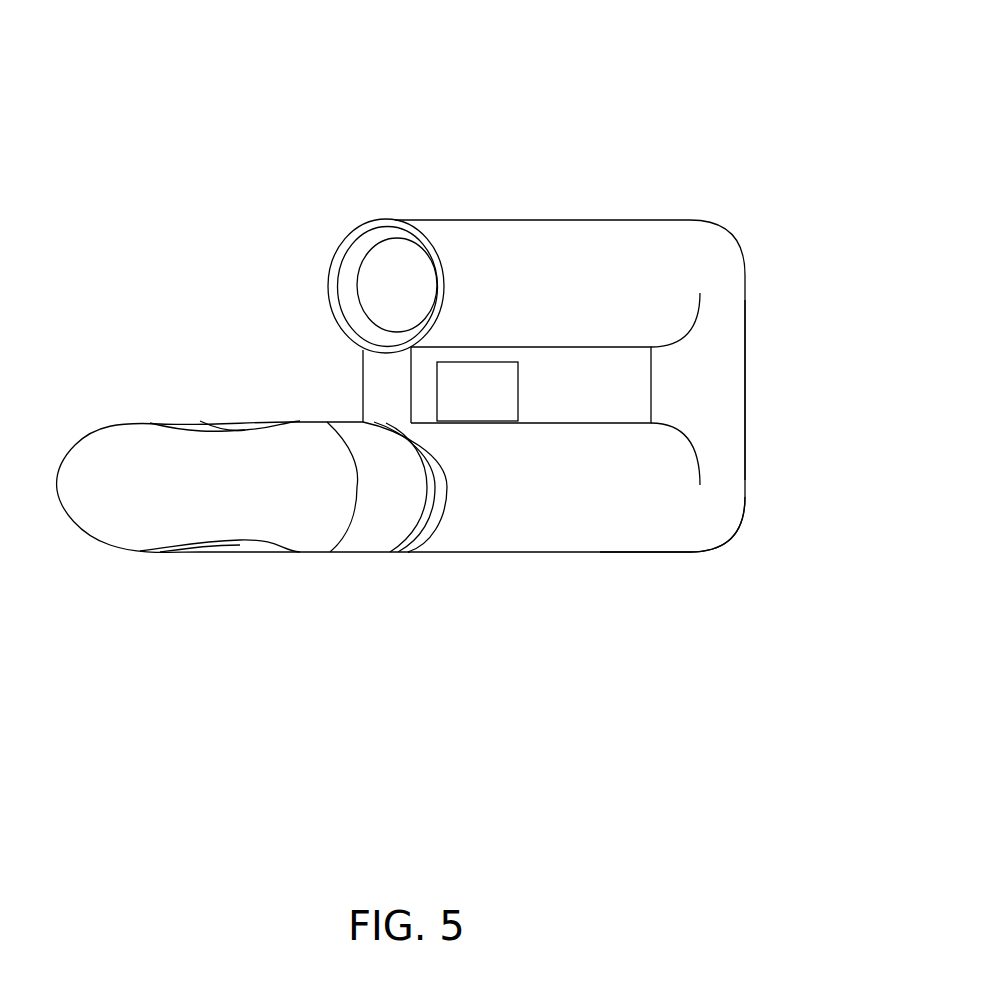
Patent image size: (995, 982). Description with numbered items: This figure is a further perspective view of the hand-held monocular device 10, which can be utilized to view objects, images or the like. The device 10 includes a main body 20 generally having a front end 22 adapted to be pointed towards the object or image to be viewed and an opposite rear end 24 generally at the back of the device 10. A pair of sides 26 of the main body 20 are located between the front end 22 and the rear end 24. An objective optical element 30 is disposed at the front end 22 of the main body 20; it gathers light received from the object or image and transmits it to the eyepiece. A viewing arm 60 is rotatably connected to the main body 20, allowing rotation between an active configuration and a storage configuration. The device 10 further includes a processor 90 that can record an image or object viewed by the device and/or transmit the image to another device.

The hand-held monocular device 10 is at (540, 126).
The main body 20 is at (549, 397).
The front end 22 is at (358, 382).
The rear end 24 is at (745, 513).
The sides 26 is at (727, 395).
The objective optical element 30 is at (367, 280).
The viewing arm 60 is at (209, 578).
The processor 90 is at (460, 397).